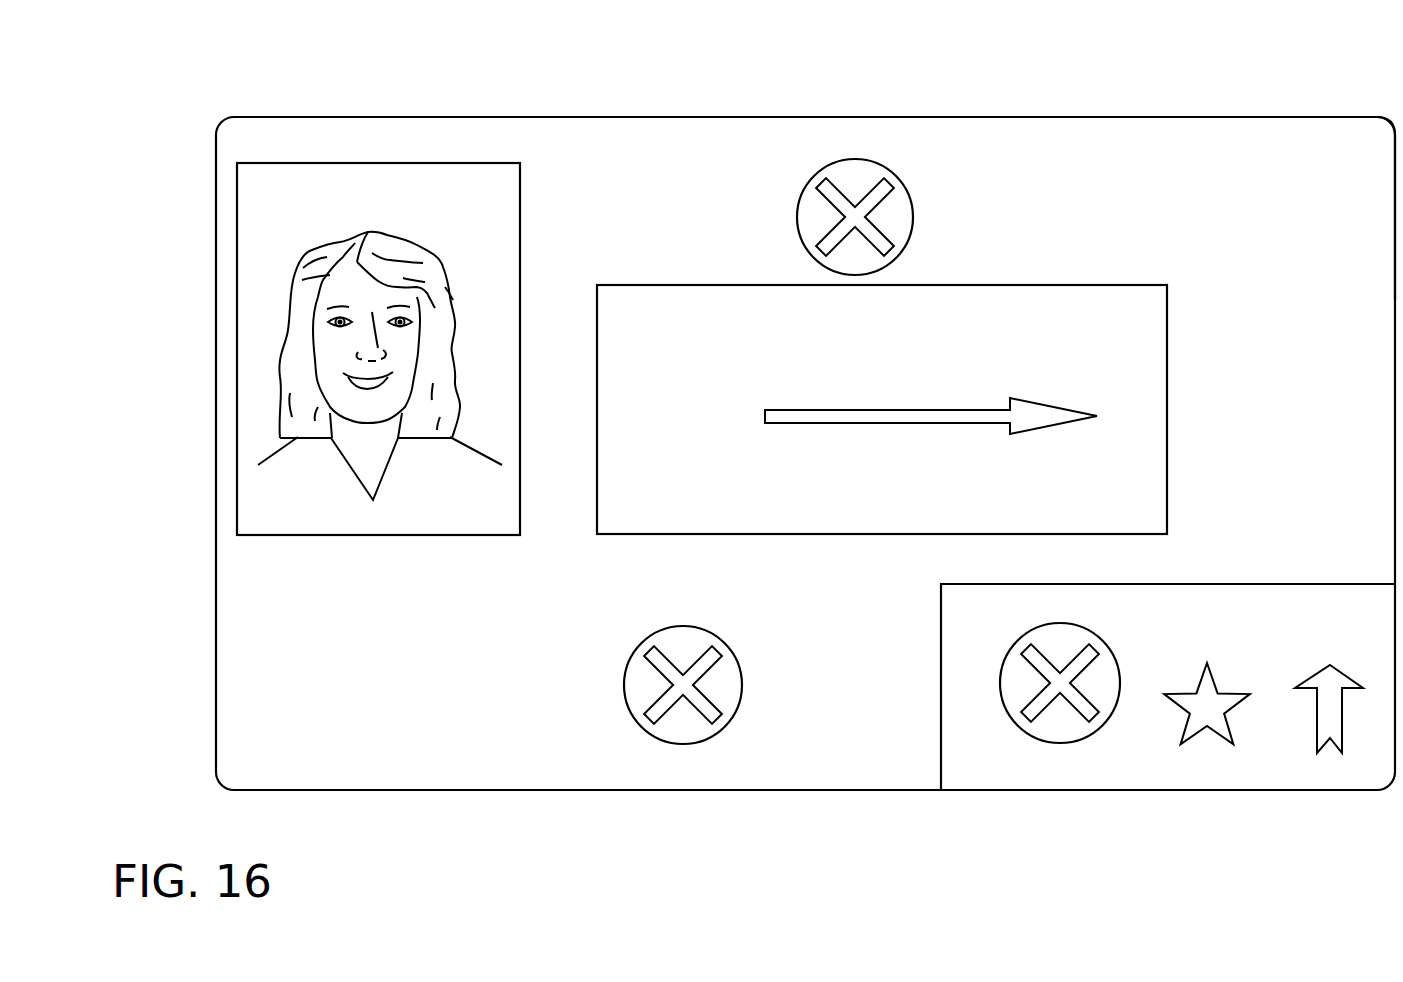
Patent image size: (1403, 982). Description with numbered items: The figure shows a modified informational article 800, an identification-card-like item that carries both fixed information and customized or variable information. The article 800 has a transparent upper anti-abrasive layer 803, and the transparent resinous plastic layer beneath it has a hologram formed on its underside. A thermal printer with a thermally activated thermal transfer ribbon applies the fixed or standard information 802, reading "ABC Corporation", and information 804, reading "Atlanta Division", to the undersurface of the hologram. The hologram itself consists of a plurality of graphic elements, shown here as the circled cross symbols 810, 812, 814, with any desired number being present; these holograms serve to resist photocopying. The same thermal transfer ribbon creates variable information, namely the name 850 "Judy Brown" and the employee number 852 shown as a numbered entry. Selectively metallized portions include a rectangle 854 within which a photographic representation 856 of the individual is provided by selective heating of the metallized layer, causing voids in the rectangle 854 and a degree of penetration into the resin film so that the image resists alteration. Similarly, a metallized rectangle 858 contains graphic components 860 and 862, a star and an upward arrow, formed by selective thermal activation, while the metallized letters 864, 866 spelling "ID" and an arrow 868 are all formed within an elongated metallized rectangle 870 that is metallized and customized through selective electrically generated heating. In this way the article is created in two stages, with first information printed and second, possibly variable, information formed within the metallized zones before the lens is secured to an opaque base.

The informational article 800 is at (555, 804).
The information 802 is at (1050, 312).
The transparent upper anti-abrasive layer 803 is at (1277, 145).
The information 804 is at (1114, 486).
The graphic element 810 is at (758, 700).
The graphic element 812 is at (1033, 757).
The graphic element 814 is at (930, 198).
The name 850 is at (230, 633).
The employee number 852 is at (224, 692).
The rectangle 854 is at (221, 198).
The photographic representation 856 is at (282, 327).
The rectangle 858 is at (1277, 770).
The graphic component 860 is at (1213, 728).
The graphic component 862 is at (1316, 668).
The metallized letter 864 is at (625, 400).
The metallized letter 866 is at (668, 456).
The arrow 868 is at (828, 410).
The elongated metallized rectangle 870 is at (637, 535).